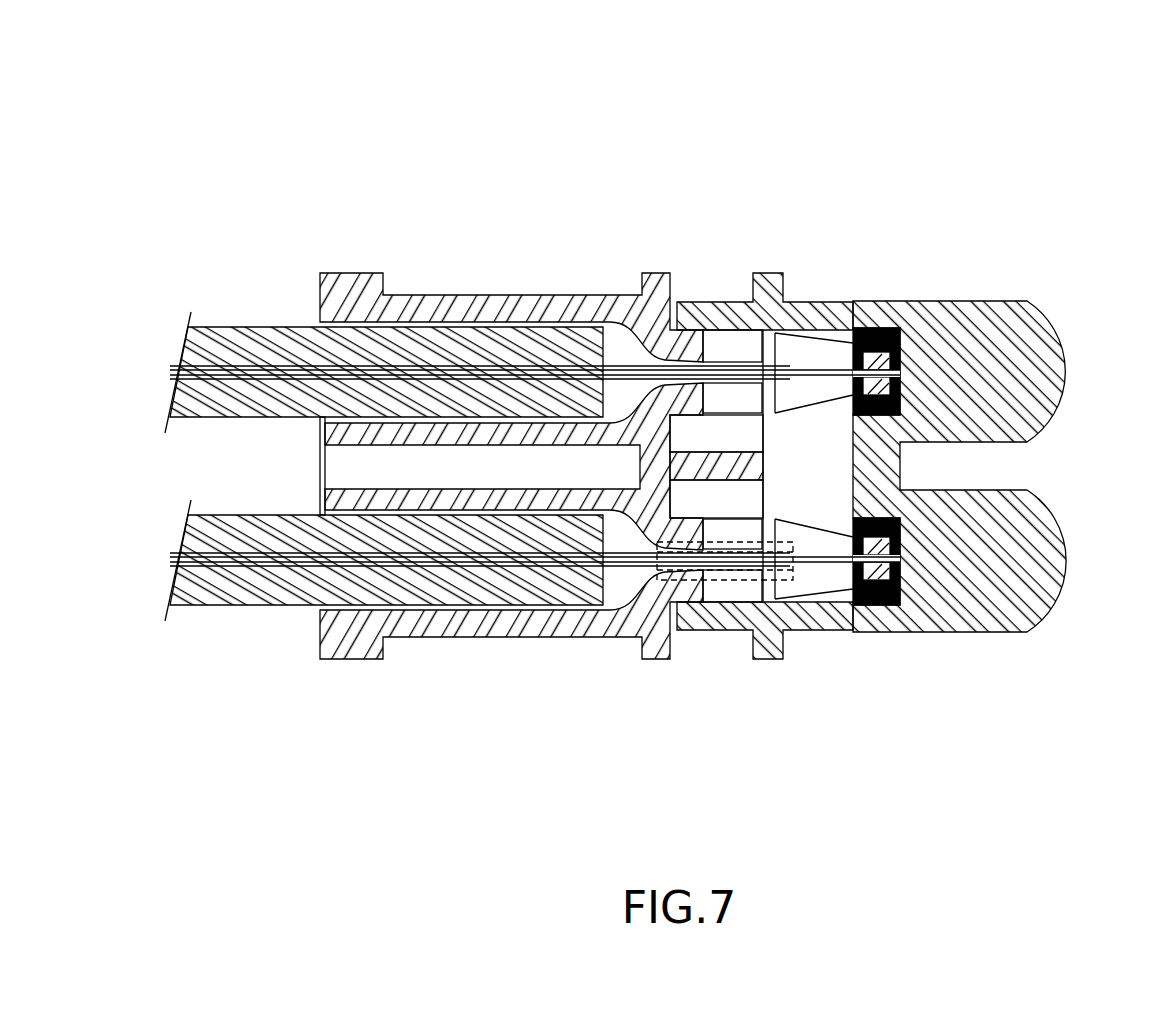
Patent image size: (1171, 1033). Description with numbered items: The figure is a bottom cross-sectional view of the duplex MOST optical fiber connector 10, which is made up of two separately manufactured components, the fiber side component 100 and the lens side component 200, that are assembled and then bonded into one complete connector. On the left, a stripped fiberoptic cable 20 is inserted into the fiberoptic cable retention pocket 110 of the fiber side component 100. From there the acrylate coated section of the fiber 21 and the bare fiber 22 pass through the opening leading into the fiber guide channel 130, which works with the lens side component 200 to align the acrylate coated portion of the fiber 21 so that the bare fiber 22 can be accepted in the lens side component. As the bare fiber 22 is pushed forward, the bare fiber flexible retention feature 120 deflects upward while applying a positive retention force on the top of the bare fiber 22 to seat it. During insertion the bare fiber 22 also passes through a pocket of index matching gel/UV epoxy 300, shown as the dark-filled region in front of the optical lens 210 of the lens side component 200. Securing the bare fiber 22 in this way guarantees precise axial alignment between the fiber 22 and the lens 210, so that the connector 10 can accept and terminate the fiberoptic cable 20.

The MOST optical fiber connector 10 is at (667, 405).
The fiberoptic cable 20 is at (258, 335).
The acrylate coated section of the fiber 21 is at (733, 360).
The bare fiber 22 is at (812, 360).
The fiber side component 100 is at (495, 520).
The fiberoptic cable retention pocket 110 is at (622, 590).
The bare fiber flexible retention feature 120 is at (796, 425).
The fiber guide channel 130 is at (735, 583).
The lens side component 200 is at (1011, 477).
The optical lens 210 is at (977, 337).
The index matching gel/UV epoxy 300 is at (877, 608).